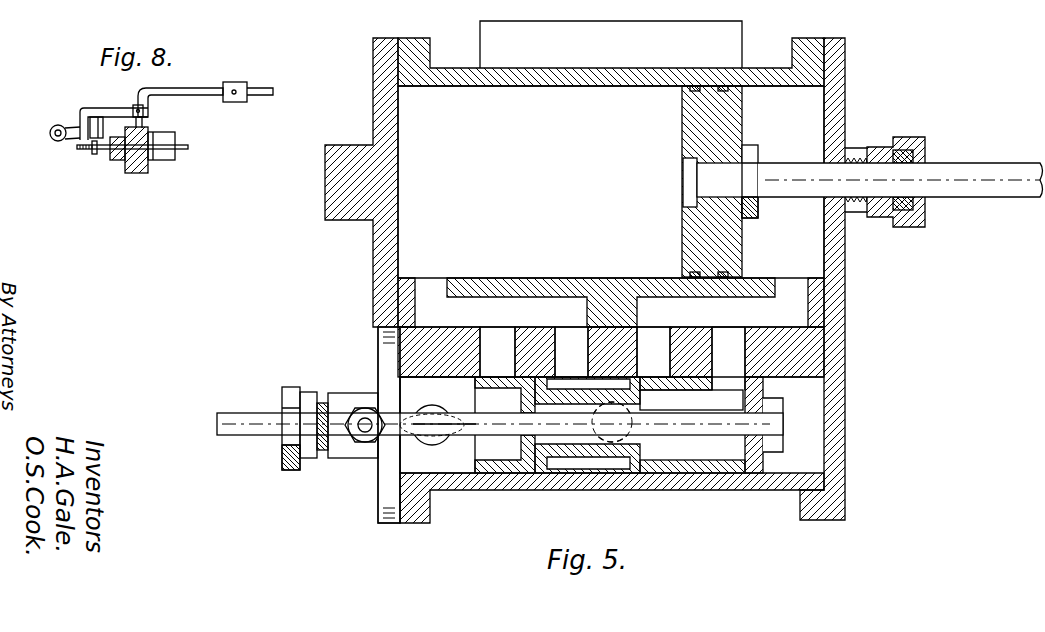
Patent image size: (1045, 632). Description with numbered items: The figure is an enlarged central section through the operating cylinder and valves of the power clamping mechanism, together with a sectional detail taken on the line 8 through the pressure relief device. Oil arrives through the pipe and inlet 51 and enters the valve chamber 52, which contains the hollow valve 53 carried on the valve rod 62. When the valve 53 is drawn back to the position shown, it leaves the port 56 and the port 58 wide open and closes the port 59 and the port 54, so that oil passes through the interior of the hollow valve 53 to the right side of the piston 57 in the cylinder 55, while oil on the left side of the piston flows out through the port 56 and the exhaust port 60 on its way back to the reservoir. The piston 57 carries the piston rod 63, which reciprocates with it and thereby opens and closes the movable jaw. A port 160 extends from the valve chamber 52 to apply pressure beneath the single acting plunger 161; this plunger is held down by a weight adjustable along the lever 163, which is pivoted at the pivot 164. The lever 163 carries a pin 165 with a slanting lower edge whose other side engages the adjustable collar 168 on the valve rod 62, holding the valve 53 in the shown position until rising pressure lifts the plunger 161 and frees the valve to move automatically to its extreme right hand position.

In FIG. 5, the section line 8 is at (217, 424).
In FIG. 5, the pipe and inlet 51 is at (437, 425).
In FIG. 5, the valve chamber 52 is at (410, 455).
In FIG. 5, the valve 53 is at (596, 458).
In FIG. 5, the port 54 is at (497, 352).
In FIG. 5, the cylinder 55 is at (611, 149).
In FIG. 5, the port 56 is at (571, 352).
In FIG. 5, the piston 57 is at (682, 135).
In FIG. 5, the port 58 is at (728, 358).
In FIG. 5, the port 59 is at (653, 352).
In FIG. 5, the exhaust port 60 is at (645, 410).
In FIG. 5, the valve rod 62 is at (247, 416).
In FIG. 8, the valve rod 62 is at (187, 145).
In FIG. 5, the piston rod 63 is at (965, 168).
In FIG. 8, the port 160 is at (153, 158).
In FIG. 5, the plunger 161 is at (363, 420).
In FIG. 8, the lever 163 is at (195, 93).
In FIG. 8, the pivot 164 is at (50, 137).
In FIG. 8, the pin 165 is at (101, 146).
In FIG. 8, the adjustable collar 168 is at (93, 152).